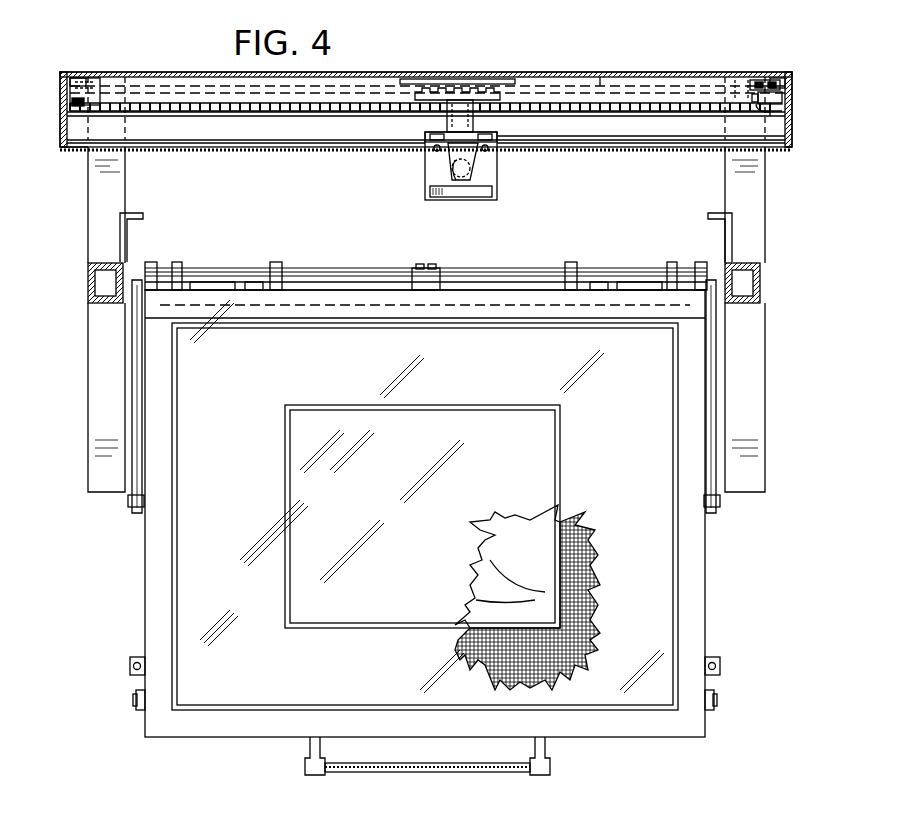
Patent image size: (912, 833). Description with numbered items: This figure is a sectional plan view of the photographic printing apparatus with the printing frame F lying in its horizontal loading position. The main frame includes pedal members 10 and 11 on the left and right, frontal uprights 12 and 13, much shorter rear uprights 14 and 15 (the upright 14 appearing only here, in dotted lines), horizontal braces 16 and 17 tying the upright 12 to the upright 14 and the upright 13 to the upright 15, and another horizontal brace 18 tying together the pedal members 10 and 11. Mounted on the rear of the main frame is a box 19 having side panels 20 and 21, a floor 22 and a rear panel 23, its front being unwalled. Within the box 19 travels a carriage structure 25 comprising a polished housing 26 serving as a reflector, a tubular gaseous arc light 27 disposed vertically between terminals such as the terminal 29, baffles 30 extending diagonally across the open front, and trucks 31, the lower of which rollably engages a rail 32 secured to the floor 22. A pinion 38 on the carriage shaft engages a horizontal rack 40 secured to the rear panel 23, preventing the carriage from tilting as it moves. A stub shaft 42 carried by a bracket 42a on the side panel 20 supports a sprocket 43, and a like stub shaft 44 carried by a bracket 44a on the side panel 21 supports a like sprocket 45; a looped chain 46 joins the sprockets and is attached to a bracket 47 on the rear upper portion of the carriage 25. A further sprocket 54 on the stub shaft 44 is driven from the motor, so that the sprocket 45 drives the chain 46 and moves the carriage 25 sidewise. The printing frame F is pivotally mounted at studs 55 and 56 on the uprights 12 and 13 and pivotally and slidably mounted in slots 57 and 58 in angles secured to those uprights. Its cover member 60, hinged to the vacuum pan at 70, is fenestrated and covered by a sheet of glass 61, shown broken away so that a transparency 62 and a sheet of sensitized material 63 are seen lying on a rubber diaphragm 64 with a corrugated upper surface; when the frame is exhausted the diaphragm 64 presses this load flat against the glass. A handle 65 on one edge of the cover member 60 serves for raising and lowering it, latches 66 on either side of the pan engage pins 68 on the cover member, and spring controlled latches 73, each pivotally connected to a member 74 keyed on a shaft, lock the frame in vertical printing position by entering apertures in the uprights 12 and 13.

The pedal member 10 is at (88, 410).
The pedal member 11 is at (765, 430).
The frontal upright 12 is at (88, 272).
The frontal upright 13 is at (760, 282).
The upright 14 is at (132, 75).
The upright 15 is at (735, 80).
The horizontal brace 16 is at (88, 210).
The horizontal brace 17 is at (758, 212).
The horizontal brace 18 is at (512, 270).
The box 19 is at (310, 148).
The side panel 20 is at (62, 140).
The side panel 21 is at (793, 147).
The floor 22 is at (578, 148).
The rear panel 23 is at (606, 58).
The carriage structure 25 is at (422, 165).
The housing 26 is at (497, 178).
The tubular gaseous arc light 27 is at (470, 168).
The terminal 29 is at (452, 172).
The baffles 30 is at (455, 190).
The trucks 31 is at (476, 140).
The rail 32 is at (637, 142).
The pinion 38 is at (445, 84).
The rack 40 is at (482, 88).
The stub shaft 42 is at (72, 104).
The bracket 42a is at (75, 82).
The sprocket 43 is at (70, 98).
The stub shaft 44 is at (775, 112).
The bracket 44a is at (786, 86).
The sprocket 45 is at (783, 97).
The chain 46 is at (255, 112).
The bracket 47 is at (447, 118).
The sprocket 54 is at (767, 80).
The stud 55 is at (132, 300).
The stud 56 is at (716, 300).
The slot 57 is at (135, 262).
The slot 58 is at (715, 262).
The cover member 60 is at (145, 590).
The inner frame panel 61 is at (422, 516).
The transparency 62 is at (490, 560).
The sheet of sensitized material 63 is at (476, 600).
The diaphragm 64 is at (590, 618).
The handle 65 is at (400, 772).
The latch 66 is at (136, 710).
The pin 68 is at (130, 686).
The hinge 70 is at (230, 282).
The spring controlled latch 73 is at (360, 270).
The member 74 is at (430, 268).
The printing frame F is at (225, 740).